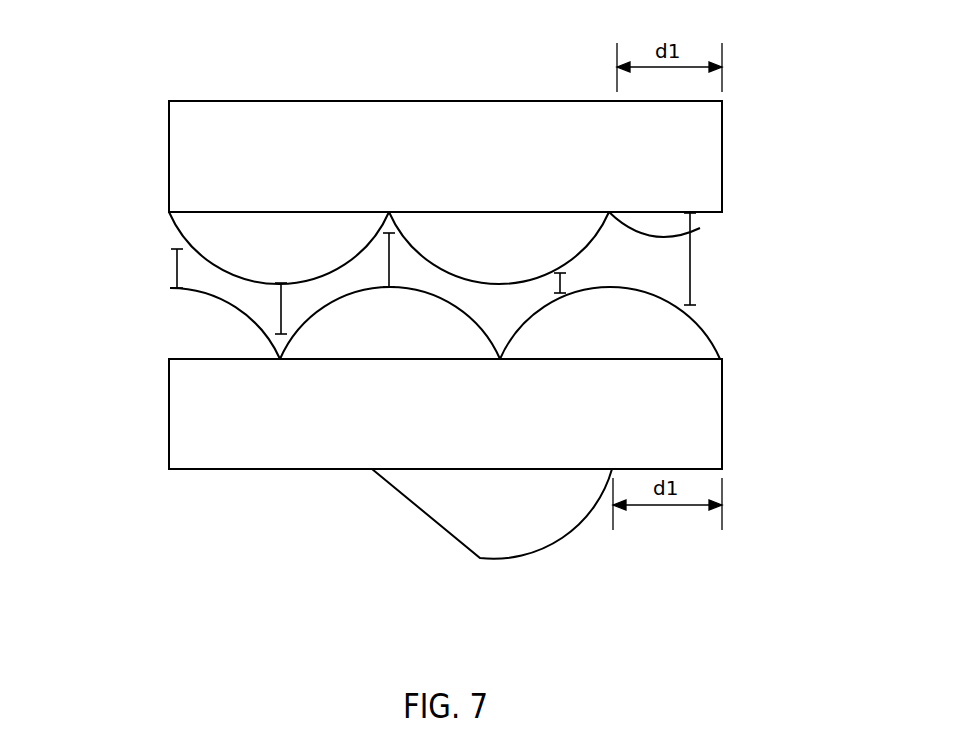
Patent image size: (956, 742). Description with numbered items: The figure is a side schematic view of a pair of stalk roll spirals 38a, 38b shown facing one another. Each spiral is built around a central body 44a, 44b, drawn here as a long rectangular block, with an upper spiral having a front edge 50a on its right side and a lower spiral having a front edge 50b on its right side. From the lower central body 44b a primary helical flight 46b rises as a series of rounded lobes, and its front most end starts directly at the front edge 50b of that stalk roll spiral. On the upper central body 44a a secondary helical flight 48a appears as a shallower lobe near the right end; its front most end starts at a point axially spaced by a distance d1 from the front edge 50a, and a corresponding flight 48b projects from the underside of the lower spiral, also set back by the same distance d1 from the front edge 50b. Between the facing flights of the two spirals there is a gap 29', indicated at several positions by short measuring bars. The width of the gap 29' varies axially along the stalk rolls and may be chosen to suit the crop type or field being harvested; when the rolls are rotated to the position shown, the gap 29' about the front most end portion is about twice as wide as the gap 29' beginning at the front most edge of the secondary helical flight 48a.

The first optical element 38a is at (138, 143).
The second optical element 38b is at (133, 429).
The central body 44a is at (169, 132).
The central body 44b is at (222, 469).
The front edge 50a is at (722, 168).
The front edge 50b is at (722, 415).
The primary helical flight 46b is at (717, 333).
The secondary helical flight 48a is at (700, 228).
The partial lens surface of second optical element 48b is at (403, 500).
The gap 29' is at (447, 194).